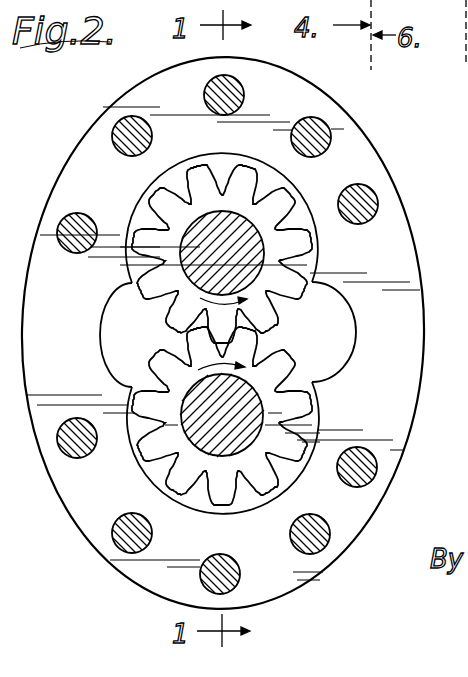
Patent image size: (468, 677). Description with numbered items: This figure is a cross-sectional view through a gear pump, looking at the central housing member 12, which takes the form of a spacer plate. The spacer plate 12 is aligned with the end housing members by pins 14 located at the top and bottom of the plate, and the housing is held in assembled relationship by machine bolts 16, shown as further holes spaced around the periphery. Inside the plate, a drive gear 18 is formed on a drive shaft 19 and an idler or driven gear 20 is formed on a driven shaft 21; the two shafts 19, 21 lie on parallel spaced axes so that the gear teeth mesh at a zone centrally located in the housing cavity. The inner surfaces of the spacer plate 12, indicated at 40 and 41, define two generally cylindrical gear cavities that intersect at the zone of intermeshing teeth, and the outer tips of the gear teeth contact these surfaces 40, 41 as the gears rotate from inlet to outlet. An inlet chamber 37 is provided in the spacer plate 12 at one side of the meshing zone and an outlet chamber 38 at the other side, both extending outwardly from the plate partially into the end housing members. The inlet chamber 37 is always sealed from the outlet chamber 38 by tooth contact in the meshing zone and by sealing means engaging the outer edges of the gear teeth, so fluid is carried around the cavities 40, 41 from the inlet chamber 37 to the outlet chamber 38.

The central housing member 12 is at (404, 258).
The pins 14 is at (205, 92).
The machine bolts 16 is at (386, 140).
The drive gear 18 is at (294, 413).
The drive shaft 19 is at (189, 437).
The driven gear 20 is at (290, 235).
The driven shaft 21 is at (237, 232).
The inlet chamber 37 is at (344, 346).
The outlet chamber 38 is at (121, 353).
The gear cavity 40 is at (177, 176).
The gear cavity 41 is at (195, 507).